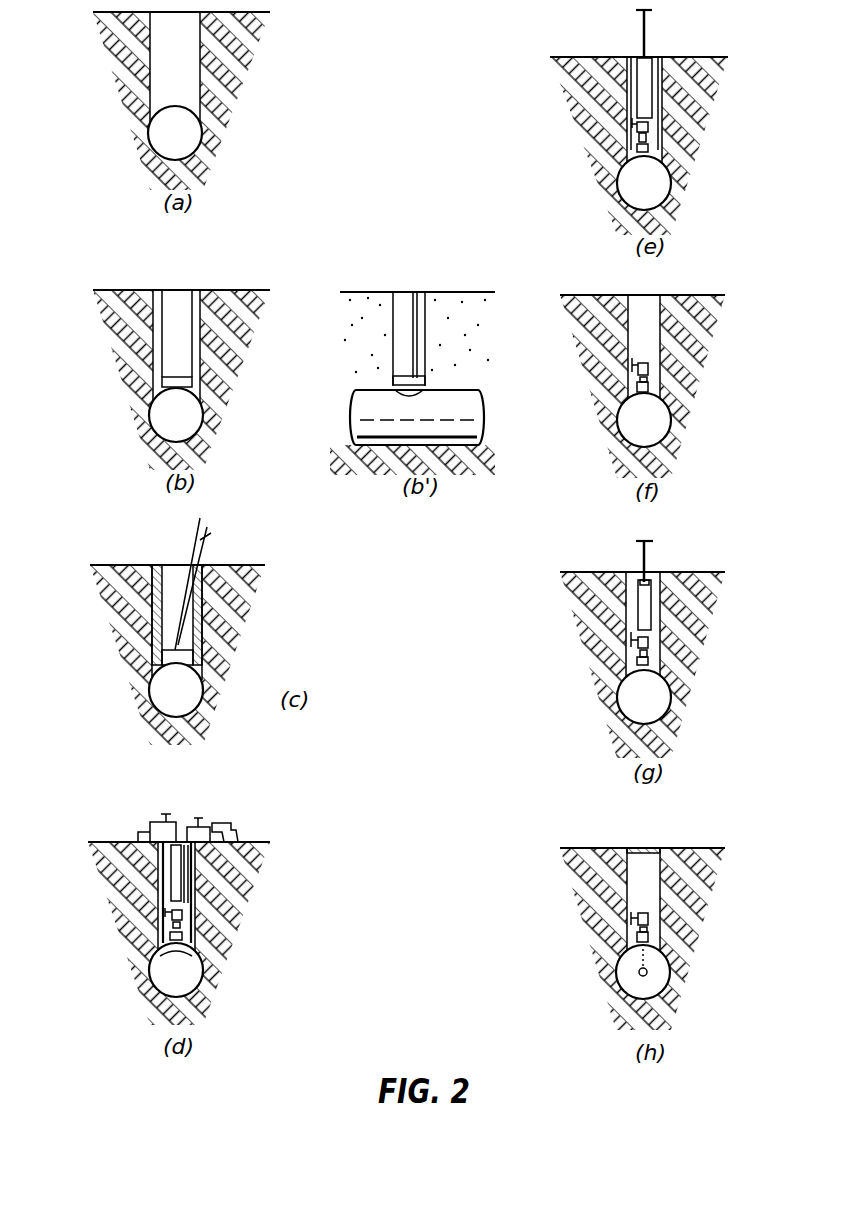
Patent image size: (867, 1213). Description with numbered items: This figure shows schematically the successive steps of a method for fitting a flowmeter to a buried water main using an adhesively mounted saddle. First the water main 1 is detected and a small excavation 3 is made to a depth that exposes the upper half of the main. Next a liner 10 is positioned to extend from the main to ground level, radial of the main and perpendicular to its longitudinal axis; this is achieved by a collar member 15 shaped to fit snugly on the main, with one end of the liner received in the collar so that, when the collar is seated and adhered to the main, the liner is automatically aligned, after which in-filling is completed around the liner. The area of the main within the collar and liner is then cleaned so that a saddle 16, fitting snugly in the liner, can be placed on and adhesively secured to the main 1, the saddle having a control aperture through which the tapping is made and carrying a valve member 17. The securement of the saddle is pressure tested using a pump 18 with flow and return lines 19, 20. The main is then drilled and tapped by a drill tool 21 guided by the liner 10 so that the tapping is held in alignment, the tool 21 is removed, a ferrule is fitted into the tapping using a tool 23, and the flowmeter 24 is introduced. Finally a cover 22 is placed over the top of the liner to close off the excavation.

The water main 1 is at (190, 145).
The excavation 3 is at (190, 85).
The liner 10 is at (194, 340).
The collar member 15 is at (165, 380).
The saddle 16 is at (163, 958).
The valve member 17 is at (183, 917).
The pump 18 is at (231, 832).
The flow line 19 is at (190, 826).
The return line 20 is at (157, 822).
The drill tool 21 is at (650, 108).
The cover 22 is at (647, 848).
The ferrule fitting tool 23 is at (640, 613).
The flowmeter 24 is at (640, 967).